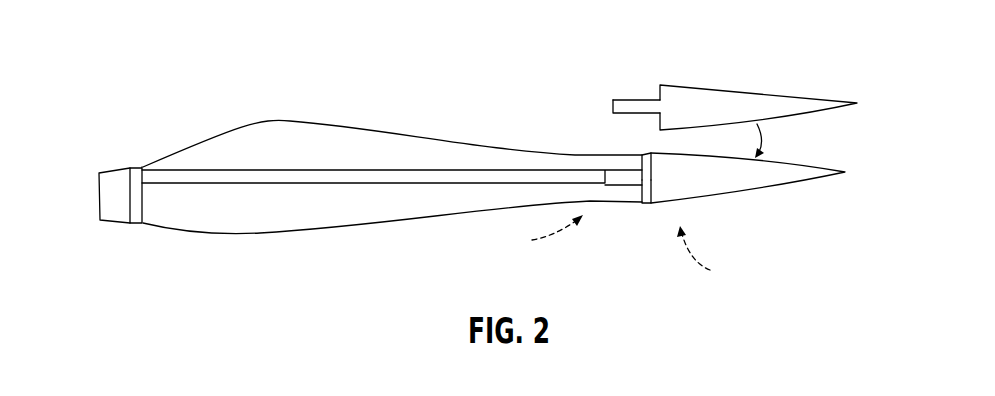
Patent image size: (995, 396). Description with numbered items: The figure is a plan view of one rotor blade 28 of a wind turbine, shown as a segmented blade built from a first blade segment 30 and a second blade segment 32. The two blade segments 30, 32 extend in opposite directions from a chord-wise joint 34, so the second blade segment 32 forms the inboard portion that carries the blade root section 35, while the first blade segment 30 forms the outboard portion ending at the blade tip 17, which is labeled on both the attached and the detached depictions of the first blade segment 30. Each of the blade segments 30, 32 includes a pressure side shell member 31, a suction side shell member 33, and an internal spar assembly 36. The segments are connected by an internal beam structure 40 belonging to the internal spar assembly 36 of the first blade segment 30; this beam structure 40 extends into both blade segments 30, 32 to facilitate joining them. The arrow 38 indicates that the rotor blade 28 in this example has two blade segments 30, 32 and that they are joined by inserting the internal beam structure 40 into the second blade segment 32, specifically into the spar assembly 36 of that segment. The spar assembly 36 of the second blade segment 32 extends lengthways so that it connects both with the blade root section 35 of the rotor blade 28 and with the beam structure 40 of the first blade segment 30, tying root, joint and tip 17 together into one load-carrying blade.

The rotor blade 28 is at (157, 40).
The blade root section 35 is at (115, 208).
The second blade segment 32 is at (184, 218).
The internal spar assembly 36 is at (395, 168).
The internal beam structure 40 is at (613, 99).
The suction side shell member 33 is at (655, 167).
The chord-wise joint 34 is at (643, 203).
The first blade segment 30 is at (733, 89).
The distal tip end 17 is at (857, 103).
The arrow 38 is at (766, 141).
The pressure side shell member 31 is at (624, 252).